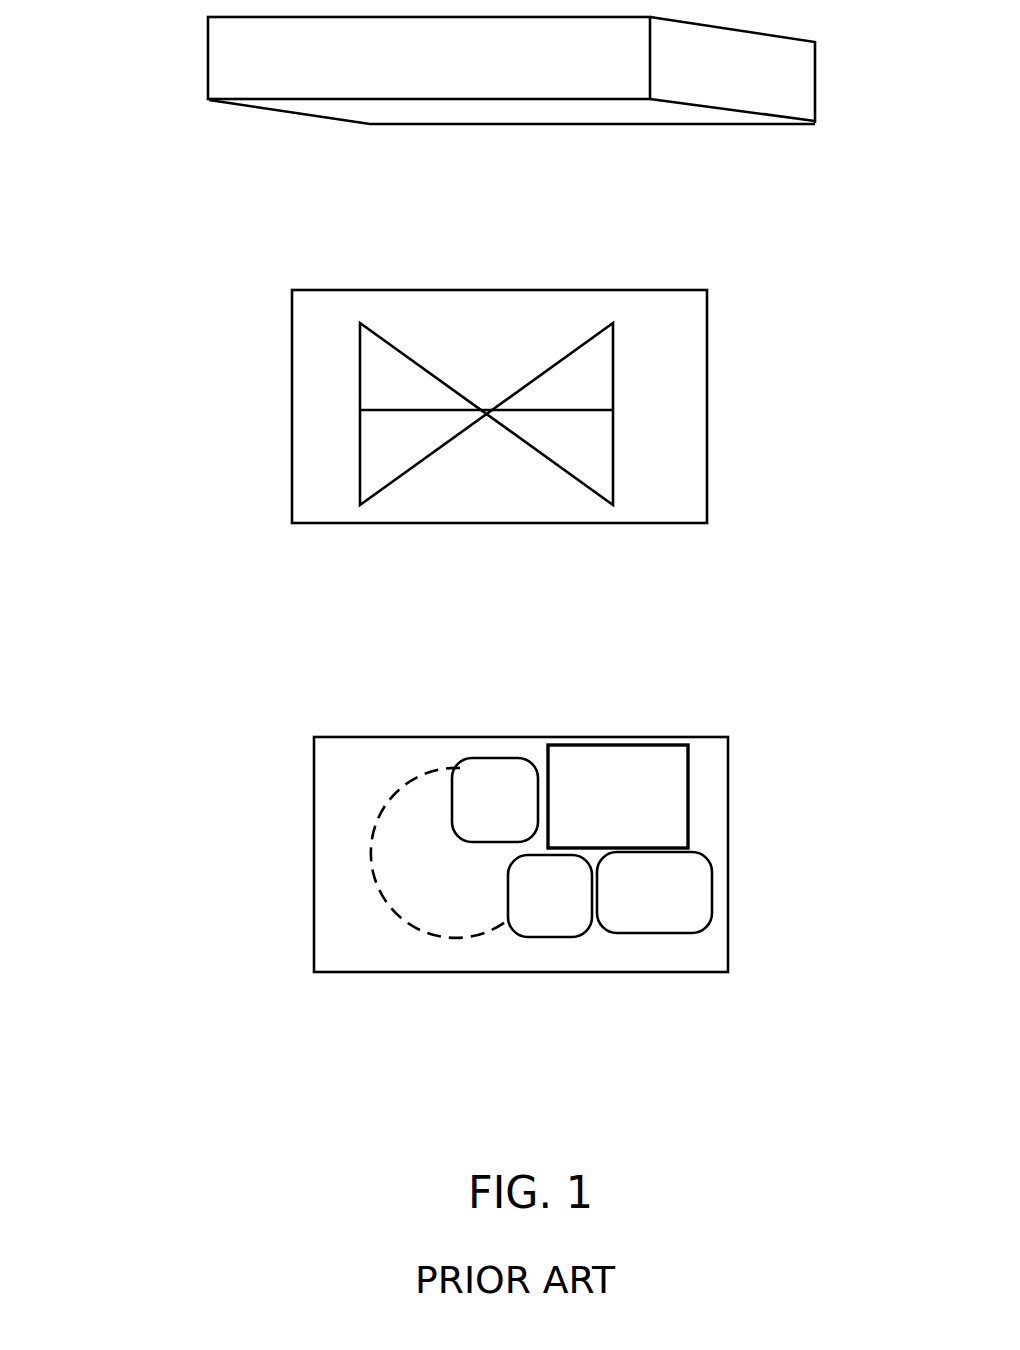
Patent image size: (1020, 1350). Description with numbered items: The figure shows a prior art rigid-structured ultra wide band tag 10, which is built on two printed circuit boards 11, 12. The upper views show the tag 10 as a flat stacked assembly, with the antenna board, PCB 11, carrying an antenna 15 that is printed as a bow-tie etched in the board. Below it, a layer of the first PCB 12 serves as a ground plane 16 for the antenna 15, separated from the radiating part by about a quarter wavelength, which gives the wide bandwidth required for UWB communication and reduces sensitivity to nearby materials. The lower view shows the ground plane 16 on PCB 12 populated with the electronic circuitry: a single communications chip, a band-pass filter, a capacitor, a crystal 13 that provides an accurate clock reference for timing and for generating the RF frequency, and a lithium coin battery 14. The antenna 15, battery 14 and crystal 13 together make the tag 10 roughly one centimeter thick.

The ultra wide band tag 10 is at (208, 58).
The printed circuit board 11 is at (815, 70).
The printed circuit board 12 is at (705, 108).
The crystal 13 is at (705, 920).
The lithium coin battery 14 is at (417, 930).
The antenna 15 is at (428, 455).
The ground plane 16 is at (337, 807).